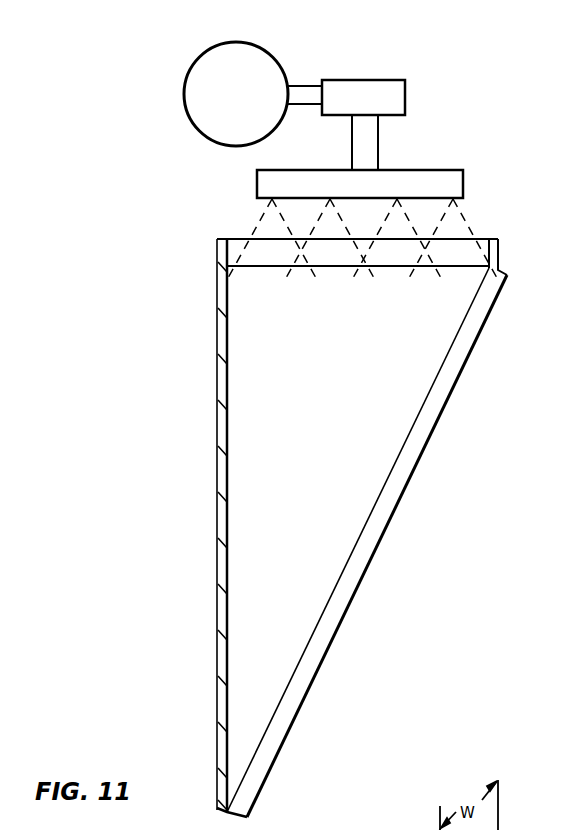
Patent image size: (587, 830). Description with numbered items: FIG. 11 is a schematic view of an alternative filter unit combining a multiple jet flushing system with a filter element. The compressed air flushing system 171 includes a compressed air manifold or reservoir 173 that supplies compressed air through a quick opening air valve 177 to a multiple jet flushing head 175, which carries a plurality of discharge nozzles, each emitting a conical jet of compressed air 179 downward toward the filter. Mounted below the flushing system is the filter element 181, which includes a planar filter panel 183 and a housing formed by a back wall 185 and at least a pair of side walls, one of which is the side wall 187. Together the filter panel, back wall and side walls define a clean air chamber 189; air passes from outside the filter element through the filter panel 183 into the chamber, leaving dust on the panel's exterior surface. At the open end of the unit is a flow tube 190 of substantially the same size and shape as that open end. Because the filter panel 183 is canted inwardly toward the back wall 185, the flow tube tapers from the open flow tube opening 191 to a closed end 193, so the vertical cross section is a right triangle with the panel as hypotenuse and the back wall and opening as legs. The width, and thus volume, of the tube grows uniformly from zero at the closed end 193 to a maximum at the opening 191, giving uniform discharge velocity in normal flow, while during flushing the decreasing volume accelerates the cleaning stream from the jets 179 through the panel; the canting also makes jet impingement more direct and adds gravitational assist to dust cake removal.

The compressed air flushing system 171 is at (422, 63).
The compressed air manifold or reservoir 173 is at (274, 58).
The multiple jet flushing head 175 is at (464, 186).
The quick opening air valve 177 is at (406, 104).
The conical jet of compressed air 179 is at (248, 222).
The filter element 181 is at (361, 532).
The filter panel 183 is at (370, 566).
The back wall 185 is at (227, 616).
The side wall 187 is at (238, 512).
The clean air chamber 189 is at (348, 383).
The flow tube 190 is at (500, 262).
The flow tube opening 191 is at (488, 242).
The closed end 193 is at (222, 812).